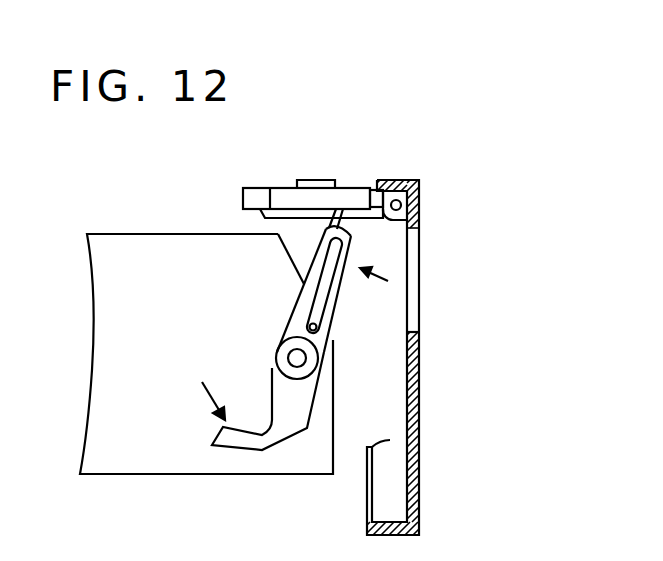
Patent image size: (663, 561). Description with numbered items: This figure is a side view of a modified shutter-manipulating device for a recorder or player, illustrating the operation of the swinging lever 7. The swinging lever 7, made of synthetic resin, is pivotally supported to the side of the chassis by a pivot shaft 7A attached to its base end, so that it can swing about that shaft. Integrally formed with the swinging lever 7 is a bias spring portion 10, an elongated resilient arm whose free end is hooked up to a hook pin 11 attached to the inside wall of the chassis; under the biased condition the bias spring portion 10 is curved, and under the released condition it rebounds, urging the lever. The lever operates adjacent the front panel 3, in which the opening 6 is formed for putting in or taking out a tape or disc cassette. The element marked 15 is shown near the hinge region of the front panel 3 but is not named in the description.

The front panel 3 is at (420, 412).
The opening 6 is at (420, 252).
The swinging lever 7 is at (270, 370).
The pivot shaft 7A is at (300, 359).
The bias spring portion 10 is at (322, 292).
The hook pin 11 is at (311, 326).
The slider bar 15 is at (286, 197).